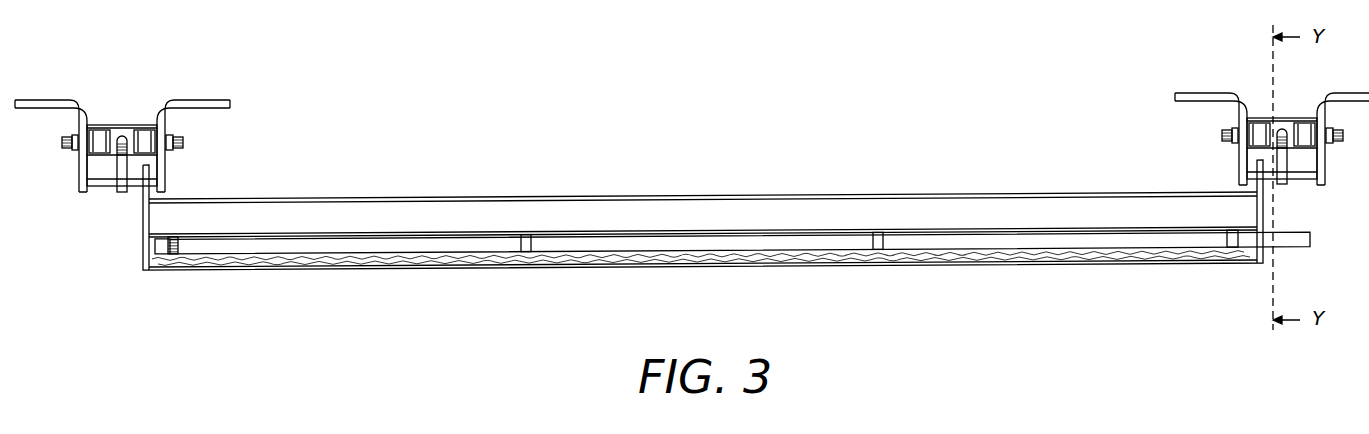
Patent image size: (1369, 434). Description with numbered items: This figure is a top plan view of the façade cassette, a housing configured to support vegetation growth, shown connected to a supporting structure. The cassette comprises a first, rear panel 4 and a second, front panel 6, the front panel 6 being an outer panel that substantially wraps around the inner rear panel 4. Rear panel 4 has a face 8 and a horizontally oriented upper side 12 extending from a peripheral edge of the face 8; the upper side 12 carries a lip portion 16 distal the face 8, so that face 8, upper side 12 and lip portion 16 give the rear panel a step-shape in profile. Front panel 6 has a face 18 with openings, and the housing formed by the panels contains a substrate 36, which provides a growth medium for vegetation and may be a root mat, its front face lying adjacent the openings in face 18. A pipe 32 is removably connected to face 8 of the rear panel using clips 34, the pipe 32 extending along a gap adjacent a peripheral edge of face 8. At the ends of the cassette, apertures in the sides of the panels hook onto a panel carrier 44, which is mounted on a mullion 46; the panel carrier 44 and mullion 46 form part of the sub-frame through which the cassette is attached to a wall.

The rear panel 4 is at (1045, 210).
The front panel 6 is at (1185, 266).
The face 8 is at (432, 236).
The upper side 12 is at (219, 213).
The lip portion 16 is at (516, 196).
The face 18 is at (997, 265).
The pipe 32 is at (703, 244).
The clips 34 is at (176, 255).
The substrate 36 is at (302, 259).
The panel carrier 44 is at (1300, 183).
The mullion 46 is at (1295, 120).